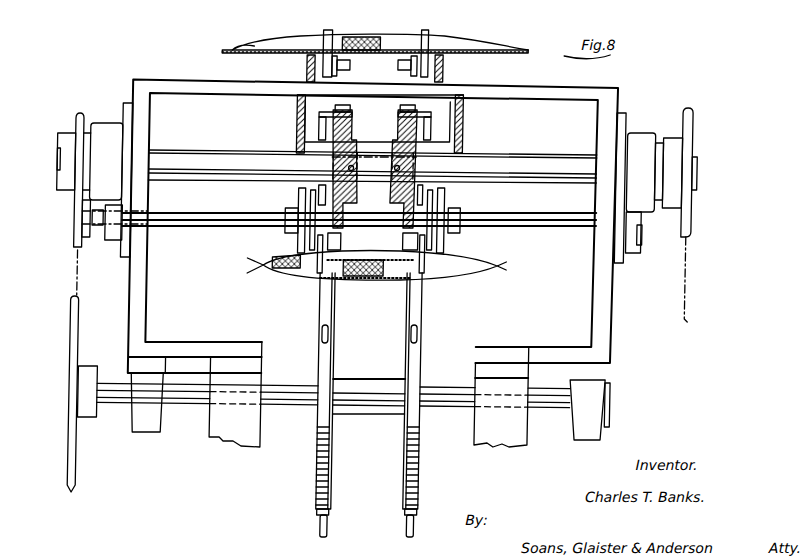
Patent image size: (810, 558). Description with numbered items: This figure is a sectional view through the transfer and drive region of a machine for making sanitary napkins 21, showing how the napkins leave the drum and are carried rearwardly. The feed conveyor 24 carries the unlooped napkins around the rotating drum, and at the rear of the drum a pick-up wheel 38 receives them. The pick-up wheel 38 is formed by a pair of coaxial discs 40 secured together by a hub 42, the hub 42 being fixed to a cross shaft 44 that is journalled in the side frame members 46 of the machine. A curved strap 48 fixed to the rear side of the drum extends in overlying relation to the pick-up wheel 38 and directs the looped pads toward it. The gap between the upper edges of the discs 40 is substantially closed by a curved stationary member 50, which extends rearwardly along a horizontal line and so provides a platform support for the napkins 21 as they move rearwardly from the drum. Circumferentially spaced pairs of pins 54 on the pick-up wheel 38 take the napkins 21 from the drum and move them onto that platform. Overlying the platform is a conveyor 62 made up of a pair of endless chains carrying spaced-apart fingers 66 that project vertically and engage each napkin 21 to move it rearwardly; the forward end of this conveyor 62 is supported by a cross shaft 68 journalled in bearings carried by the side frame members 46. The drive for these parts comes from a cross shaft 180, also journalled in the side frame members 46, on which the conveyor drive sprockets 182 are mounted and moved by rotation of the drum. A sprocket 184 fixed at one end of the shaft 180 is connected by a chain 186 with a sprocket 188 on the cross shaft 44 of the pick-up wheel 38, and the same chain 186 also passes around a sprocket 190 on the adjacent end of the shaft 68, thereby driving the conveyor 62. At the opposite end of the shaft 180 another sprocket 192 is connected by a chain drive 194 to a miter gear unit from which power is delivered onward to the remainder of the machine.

The sanitary napkin 21 is at (436, 280).
The conveyor 24 is at (334, 117).
The pick-up wheel 38 is at (361, 397).
The coaxial discs 40 is at (407, 459).
The hub 42 is at (349, 416).
The cross shaft 44 is at (304, 389).
The side frame members 46 is at (613, 347).
The curved strap 48 is at (389, 268).
The stationary member 50 is at (349, 281).
The pins 54 is at (411, 517).
The conveyor 62 is at (294, 199).
The fingers 66 is at (428, 268).
The cross shaft 68 is at (496, 228).
The cross shaft 180 is at (520, 162).
The conveyor drive sprockets 182 is at (347, 131).
The sprocket 184 is at (79, 116).
The chain 186 is at (81, 258).
The sprocket 188 is at (80, 303).
The sprocket 190 is at (79, 238).
The sprocket 192 is at (691, 214).
The chain drive 194 is at (690, 245).